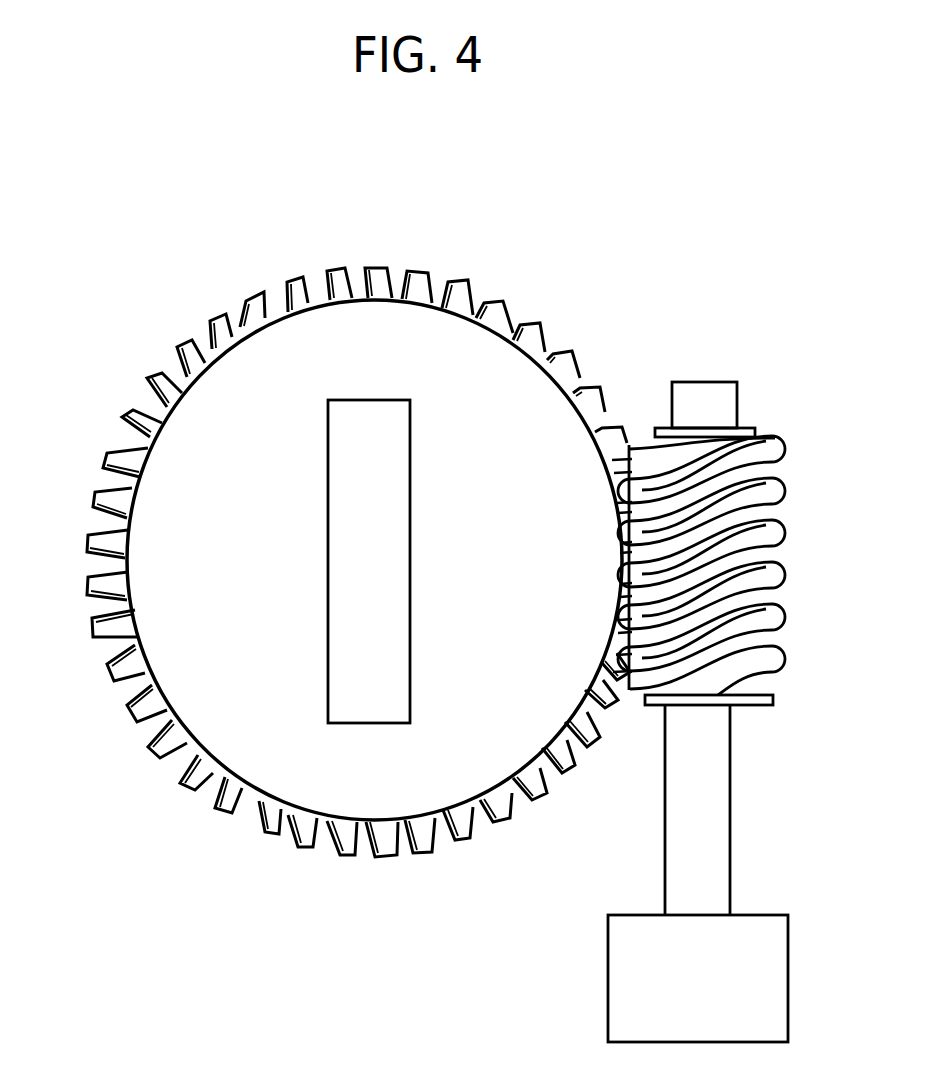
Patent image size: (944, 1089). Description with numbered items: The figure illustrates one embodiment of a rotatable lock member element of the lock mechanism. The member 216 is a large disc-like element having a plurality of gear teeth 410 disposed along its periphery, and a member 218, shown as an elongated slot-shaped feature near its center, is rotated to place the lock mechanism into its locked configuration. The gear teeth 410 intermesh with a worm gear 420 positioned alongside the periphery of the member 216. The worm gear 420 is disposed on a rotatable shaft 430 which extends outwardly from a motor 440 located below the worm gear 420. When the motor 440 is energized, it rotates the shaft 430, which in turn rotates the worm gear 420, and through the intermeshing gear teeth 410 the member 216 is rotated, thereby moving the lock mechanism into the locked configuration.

The member 216 is at (297, 357).
The member 218 is at (341, 570).
The gear teeth 410 is at (458, 287).
The worm gear 420 is at (780, 468).
The rotatable shaft 430 is at (733, 791).
The motor 440 is at (750, 928).